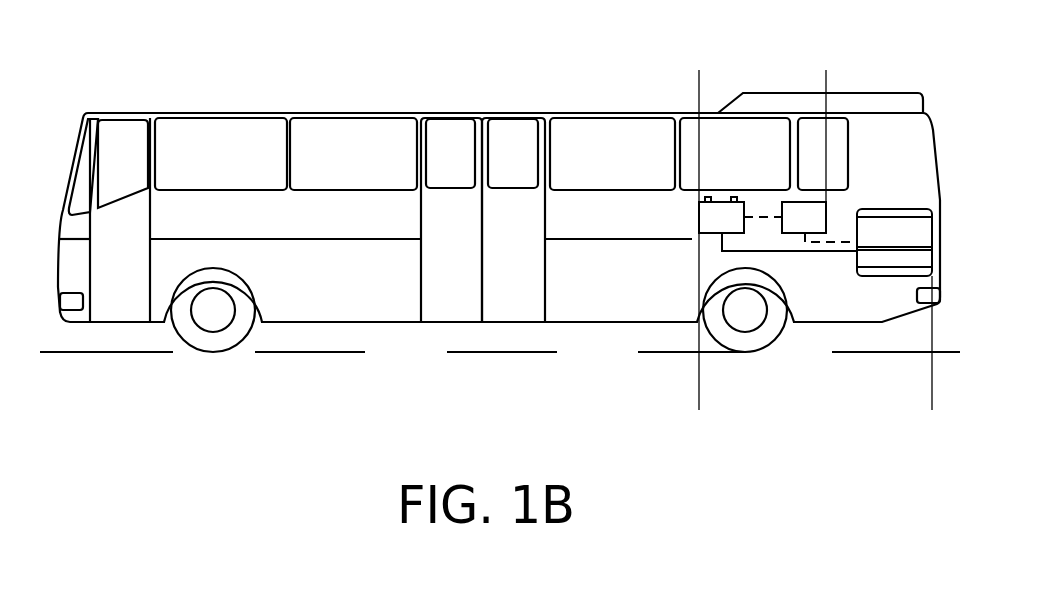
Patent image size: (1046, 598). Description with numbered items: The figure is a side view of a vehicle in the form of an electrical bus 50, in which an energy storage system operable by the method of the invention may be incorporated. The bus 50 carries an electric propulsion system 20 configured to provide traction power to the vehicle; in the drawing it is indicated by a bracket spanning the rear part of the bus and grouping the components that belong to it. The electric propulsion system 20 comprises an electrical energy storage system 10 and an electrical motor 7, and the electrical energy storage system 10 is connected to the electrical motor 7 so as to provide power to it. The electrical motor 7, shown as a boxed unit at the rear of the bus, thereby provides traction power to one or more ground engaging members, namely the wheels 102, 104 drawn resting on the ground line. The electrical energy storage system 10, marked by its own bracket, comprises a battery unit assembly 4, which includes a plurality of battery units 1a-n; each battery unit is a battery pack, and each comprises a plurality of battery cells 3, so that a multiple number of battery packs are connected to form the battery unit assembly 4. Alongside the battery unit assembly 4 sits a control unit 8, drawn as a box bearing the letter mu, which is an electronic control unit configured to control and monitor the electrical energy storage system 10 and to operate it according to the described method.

The bus 50 is at (495, 59).
The electrical energy storage system 10 is at (826, 70).
The control unit 8 is at (826, 217).
The battery unit assembly 4 is at (637, 302).
The battery cells 3 is at (721, 215).
The battery units 1a-n is at (699, 217).
The wheel 104 is at (745, 310).
The electrical motor 7 is at (893, 276).
The electric propulsion system 20 is at (932, 410).
The wheel 102 is at (213, 310).